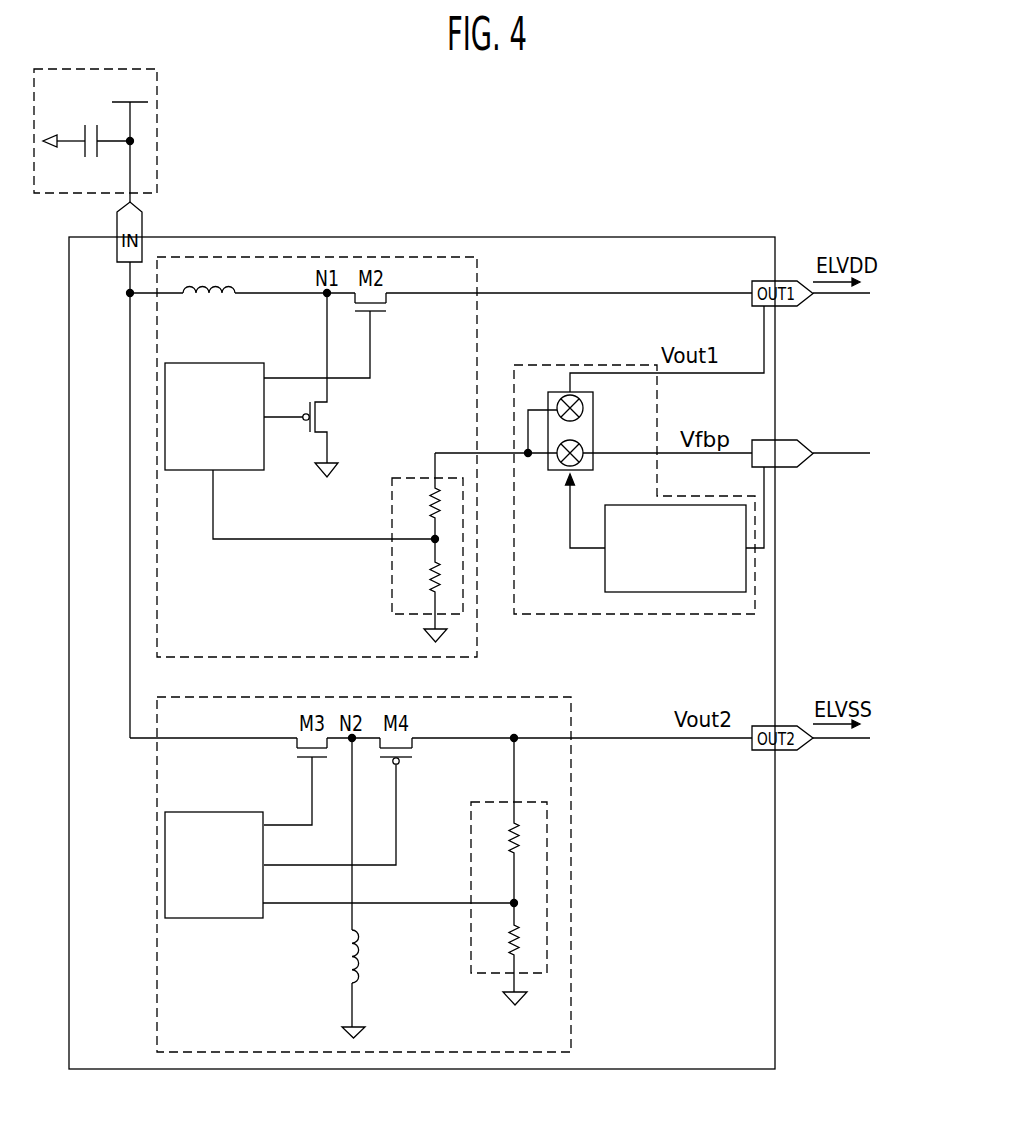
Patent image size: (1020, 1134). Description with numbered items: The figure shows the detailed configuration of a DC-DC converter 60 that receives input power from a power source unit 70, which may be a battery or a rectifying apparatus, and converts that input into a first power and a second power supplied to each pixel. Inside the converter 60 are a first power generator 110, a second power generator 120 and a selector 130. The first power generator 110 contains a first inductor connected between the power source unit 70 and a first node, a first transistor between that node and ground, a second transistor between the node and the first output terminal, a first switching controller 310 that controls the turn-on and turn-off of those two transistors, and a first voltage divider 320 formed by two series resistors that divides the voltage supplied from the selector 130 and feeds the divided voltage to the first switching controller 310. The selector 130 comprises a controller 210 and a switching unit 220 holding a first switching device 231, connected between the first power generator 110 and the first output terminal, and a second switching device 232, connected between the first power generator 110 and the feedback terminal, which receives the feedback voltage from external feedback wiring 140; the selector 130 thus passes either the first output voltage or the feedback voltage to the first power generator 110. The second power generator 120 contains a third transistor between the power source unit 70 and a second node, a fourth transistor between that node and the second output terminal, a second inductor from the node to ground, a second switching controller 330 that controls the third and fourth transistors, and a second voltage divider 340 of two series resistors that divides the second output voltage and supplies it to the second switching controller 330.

The DC-DC converter 60 is at (647, 237).
The power source unit 70 is at (158, 130).
The first power generator 110 is at (275, 457).
The second power generator 120 is at (327, 874).
The selector 130 is at (639, 493).
The external feedback wiring 140 is at (838, 452).
The controller 210 is at (690, 592).
The switching unit 220 is at (587, 393).
The first switching device 231 is at (585, 402).
The second switching device 232 is at (585, 447).
The first switching controller 310 is at (242, 363).
The first voltage divider 320 is at (390, 597).
The second switching controller 330 is at (228, 918).
The second voltage divider 340 is at (482, 973).